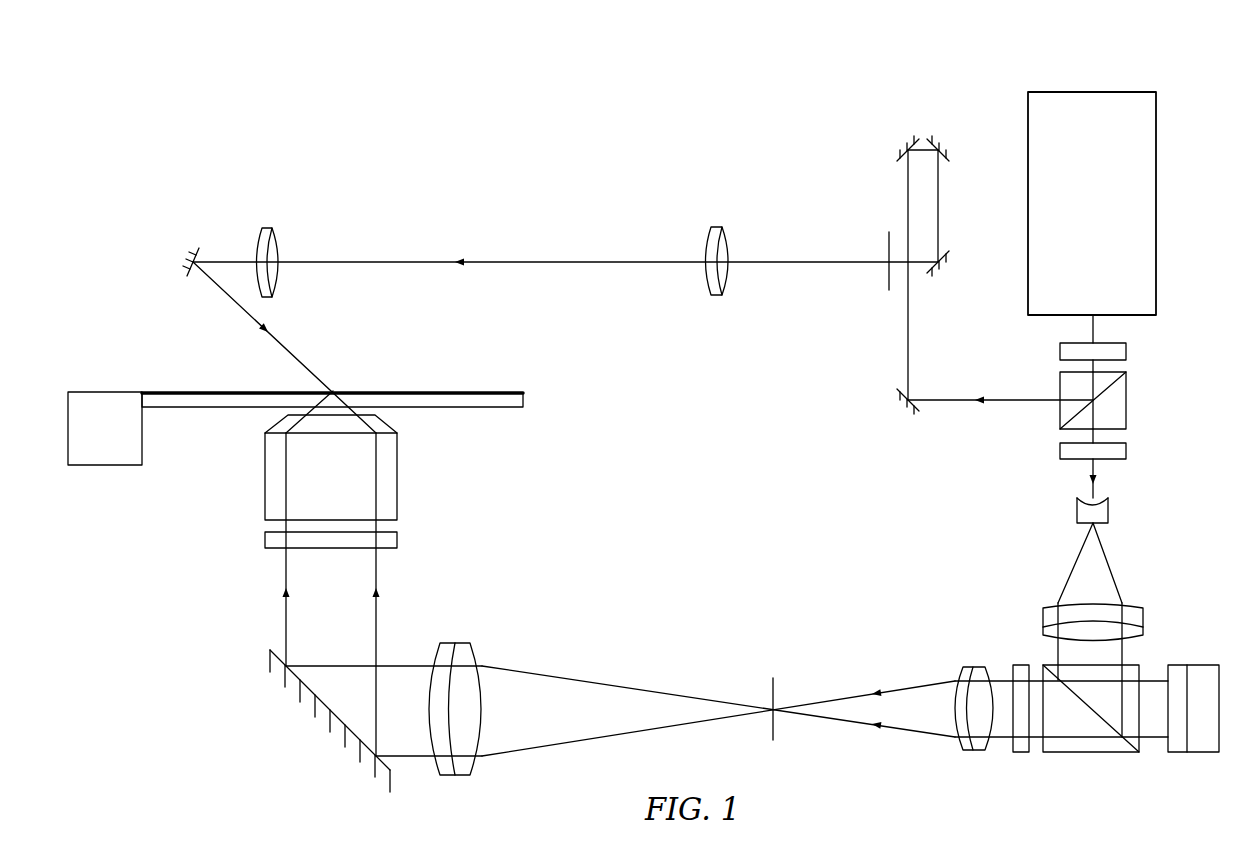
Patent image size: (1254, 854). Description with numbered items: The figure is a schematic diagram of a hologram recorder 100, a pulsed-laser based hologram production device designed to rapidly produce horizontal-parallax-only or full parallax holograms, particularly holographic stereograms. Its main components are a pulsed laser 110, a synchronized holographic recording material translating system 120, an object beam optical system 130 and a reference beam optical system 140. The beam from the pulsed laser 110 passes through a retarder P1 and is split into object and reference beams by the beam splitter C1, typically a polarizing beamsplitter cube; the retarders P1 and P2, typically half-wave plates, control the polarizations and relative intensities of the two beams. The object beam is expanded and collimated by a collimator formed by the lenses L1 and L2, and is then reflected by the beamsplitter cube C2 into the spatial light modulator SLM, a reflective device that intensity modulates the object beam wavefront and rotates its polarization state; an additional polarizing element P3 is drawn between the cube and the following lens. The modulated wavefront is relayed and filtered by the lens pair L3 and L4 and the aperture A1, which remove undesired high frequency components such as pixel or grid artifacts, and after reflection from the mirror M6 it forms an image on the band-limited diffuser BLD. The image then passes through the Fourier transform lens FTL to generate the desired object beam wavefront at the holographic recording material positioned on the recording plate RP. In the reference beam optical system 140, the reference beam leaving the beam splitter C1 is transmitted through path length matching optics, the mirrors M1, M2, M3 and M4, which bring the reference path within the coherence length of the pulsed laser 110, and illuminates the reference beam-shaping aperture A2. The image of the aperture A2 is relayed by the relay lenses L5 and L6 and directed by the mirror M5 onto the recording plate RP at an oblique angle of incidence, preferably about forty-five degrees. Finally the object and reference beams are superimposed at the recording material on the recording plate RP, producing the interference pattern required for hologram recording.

The hologram recorder 100 is at (268, 749).
The pulsed laser 110 is at (1107, 272).
The synchronized holographic recording material translating system 120 is at (117, 439).
The object beam optical system 130 is at (1187, 371).
The reference beam optical system 140 is at (618, 204).
The mirror M1 is at (903, 413).
The mirror M2 is at (899, 138).
The mirror M3 is at (947, 138).
The mirror M4 is at (945, 273).
The mirror M5 is at (172, 262).
The mirror M6 is at (330, 721).
The lens L1 is at (1106, 511).
The lens L2 is at (1106, 622).
The lens L3 is at (974, 693).
The lens L4 is at (455, 696).
The reference beam relay optics lens L5 is at (717, 247).
The reference beam relay optics lens L6 is at (268, 249).
The retarder P1 is at (1106, 352).
The retarder P2 is at (1107, 452).
The polarizer P3 is at (1023, 724).
The beam splitter C1 is at (1107, 400).
The beamsplitter cube C2 is at (1091, 724).
The aperture A1 is at (774, 695).
The reference beam-shaping aperture A2 is at (888, 277).
The Fourier transform lens FTL is at (349, 467).
The band-limited diffuser BLD is at (350, 540).
The recording plate RP is at (347, 397).
The spatial light modulator SLM is at (1193, 724).